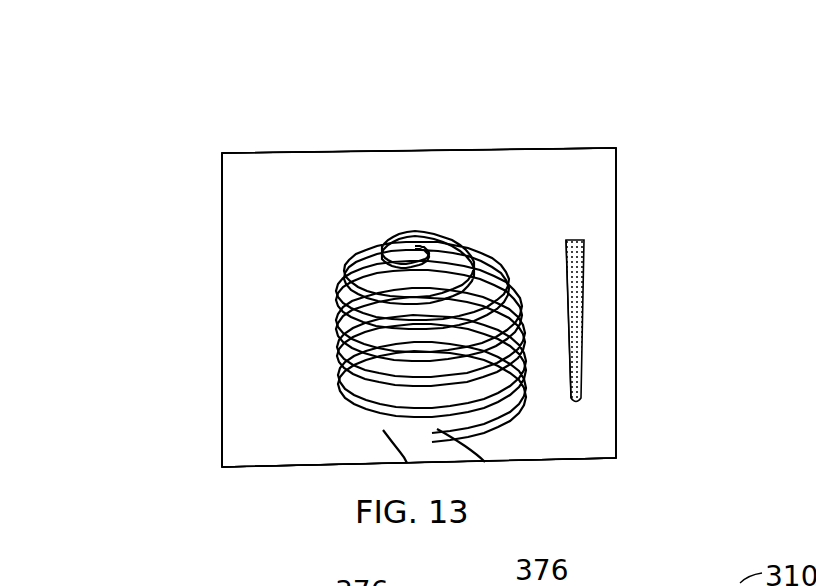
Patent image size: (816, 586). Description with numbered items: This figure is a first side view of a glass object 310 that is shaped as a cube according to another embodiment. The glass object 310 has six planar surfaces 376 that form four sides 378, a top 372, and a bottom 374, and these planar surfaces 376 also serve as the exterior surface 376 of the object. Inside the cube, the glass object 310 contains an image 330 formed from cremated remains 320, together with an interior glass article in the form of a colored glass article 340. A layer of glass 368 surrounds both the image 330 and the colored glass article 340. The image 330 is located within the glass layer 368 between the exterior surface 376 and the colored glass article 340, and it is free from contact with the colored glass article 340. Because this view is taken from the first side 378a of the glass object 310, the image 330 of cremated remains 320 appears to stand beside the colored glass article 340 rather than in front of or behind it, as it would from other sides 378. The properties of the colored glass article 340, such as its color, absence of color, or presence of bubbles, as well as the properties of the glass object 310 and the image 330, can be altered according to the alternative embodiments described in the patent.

The glass object 310 is at (650, 93).
The cremated remains 320 is at (583, 322).
The image 330 is at (590, 283).
The colored glass article 340 is at (363, 407).
The layer of glass 368 is at (547, 202).
The top 372 is at (455, 148).
The bottom 374 is at (335, 470).
The planar surfaces 376 is at (387, 150).
The sides 378 is at (612, 343).
The first side 378a is at (347, 203).